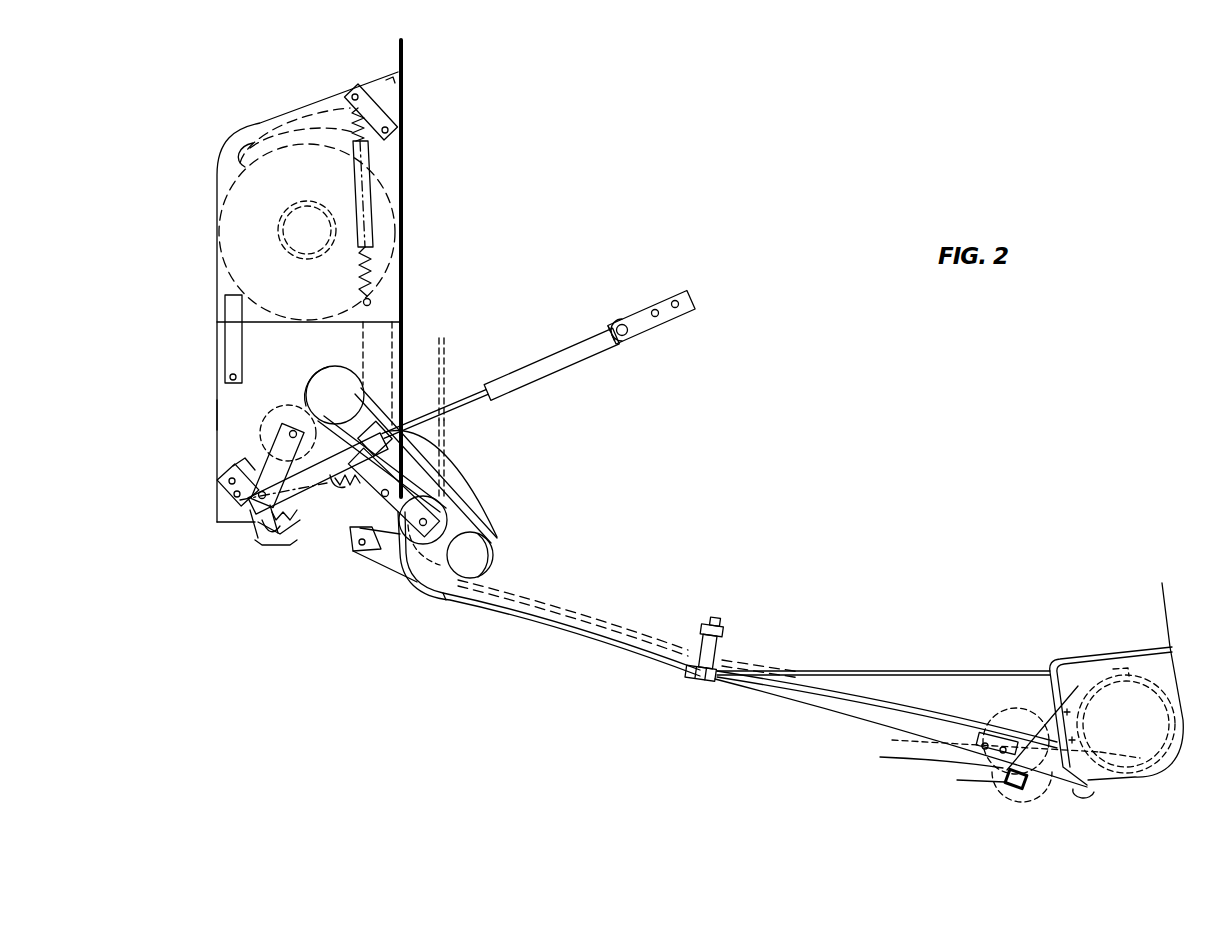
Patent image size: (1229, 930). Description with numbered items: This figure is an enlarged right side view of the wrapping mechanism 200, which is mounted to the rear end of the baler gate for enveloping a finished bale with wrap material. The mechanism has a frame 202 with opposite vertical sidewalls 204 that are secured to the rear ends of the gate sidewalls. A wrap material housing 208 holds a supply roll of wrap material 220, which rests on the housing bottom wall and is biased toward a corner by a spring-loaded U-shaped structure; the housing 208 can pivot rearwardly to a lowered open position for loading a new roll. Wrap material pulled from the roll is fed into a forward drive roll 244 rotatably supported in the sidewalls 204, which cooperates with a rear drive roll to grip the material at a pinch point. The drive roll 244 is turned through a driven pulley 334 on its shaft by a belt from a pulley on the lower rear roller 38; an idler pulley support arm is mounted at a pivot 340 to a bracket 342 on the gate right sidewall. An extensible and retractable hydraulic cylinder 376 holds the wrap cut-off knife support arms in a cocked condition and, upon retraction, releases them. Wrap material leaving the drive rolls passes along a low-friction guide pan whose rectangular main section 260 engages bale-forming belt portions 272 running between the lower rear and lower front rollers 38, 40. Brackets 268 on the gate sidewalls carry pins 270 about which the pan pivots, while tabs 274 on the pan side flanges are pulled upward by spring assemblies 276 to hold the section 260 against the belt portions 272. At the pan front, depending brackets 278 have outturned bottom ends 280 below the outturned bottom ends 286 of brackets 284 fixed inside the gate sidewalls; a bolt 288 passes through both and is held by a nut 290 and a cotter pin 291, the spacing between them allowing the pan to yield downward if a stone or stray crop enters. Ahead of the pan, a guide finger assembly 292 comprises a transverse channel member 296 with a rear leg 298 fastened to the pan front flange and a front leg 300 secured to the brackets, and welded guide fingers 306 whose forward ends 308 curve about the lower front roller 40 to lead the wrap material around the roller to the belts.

The lower rear roller 38 is at (497, 553).
The lower front roller 40 is at (1098, 680).
The wrapping mechanism 200 is at (292, 555).
The frame 202 is at (215, 359).
The vertical sidewalls 204 is at (216, 411).
The wrap material housing 208 is at (214, 190).
The supply roll of wrap material 220 is at (383, 178).
The forward drive roll 244 is at (330, 378).
The main section 260 is at (622, 625).
The brackets 268 is at (383, 548).
The pins 270 is at (353, 548).
The bale-forming belt portions 272 is at (560, 612).
The tabs 274 is at (710, 682).
The spring assemblies 276 is at (726, 623).
The depending brackets 278 is at (993, 772).
The outturned bottom ends 280 is at (977, 763).
The brackets 284 is at (1077, 699).
The outturned bottom ends 286 is at (1090, 793).
The bolt 288 is at (1078, 724).
The nut 290 is at (916, 759).
The cotter pin 291 is at (958, 781).
The guide finger assembly 292 is at (1020, 730).
The channel member 296 is at (1030, 700).
The rear leg 298 is at (971, 741).
The front leg 300 is at (1033, 797).
The guide fingers 306 is at (1160, 775).
The forward ends 308 is at (1108, 746).
The driven pulley 334 is at (306, 400).
The pivot 340 is at (443, 460).
The bracket 342 is at (443, 436).
The hydraulic cylinder 376 is at (563, 366).